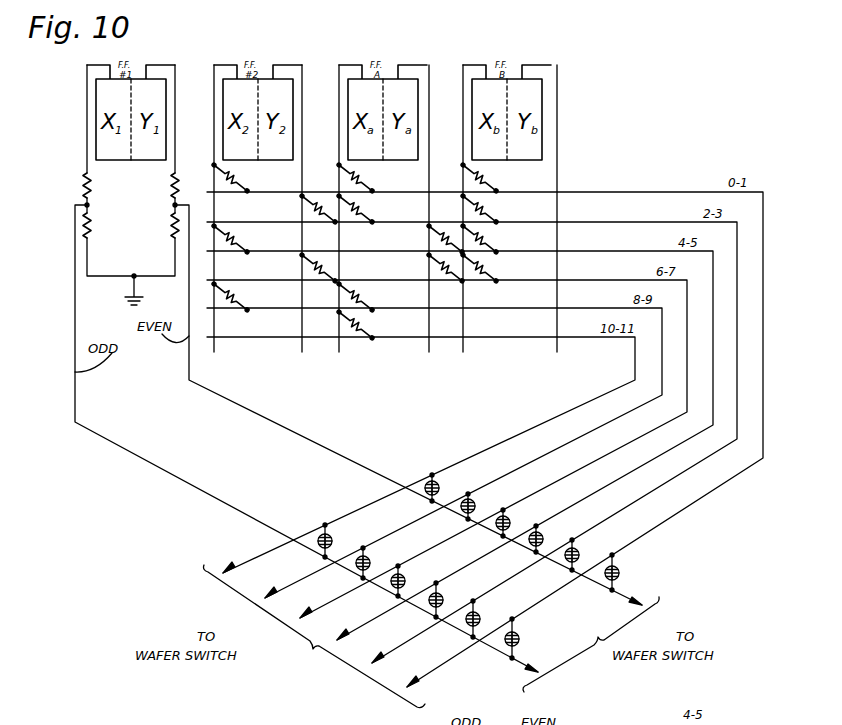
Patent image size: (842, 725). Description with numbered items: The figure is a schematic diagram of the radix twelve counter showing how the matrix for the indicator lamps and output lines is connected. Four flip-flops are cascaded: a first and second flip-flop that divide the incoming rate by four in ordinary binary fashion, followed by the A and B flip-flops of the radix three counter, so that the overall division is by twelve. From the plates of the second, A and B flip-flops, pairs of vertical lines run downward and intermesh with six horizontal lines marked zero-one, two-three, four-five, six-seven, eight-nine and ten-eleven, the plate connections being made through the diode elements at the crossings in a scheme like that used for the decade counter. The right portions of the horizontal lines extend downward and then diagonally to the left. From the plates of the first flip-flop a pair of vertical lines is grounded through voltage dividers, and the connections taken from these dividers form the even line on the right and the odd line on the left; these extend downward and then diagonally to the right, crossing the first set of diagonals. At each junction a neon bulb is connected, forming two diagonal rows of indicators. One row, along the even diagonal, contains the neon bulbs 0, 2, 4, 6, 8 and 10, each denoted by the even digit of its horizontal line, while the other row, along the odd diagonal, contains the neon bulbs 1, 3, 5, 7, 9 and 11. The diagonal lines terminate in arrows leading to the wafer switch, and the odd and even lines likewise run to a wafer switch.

The neon bulb 0 is at (619, 572).
The neon bulb 1 is at (519, 638).
The neon bulb 2 is at (579, 554).
The neon bulb 3 is at (480, 618).
The neon bulb 4 is at (543, 538).
The neon bulb 5 is at (443, 599).
The neon bulb 6 is at (510, 522).
The neon bulb 7 is at (405, 580).
The neon bulb 8 is at (475, 505).
The neon bulb 9 is at (370, 562).
The neon bulb 10 is at (439, 487).
The neon bulb 11 is at (332, 540).